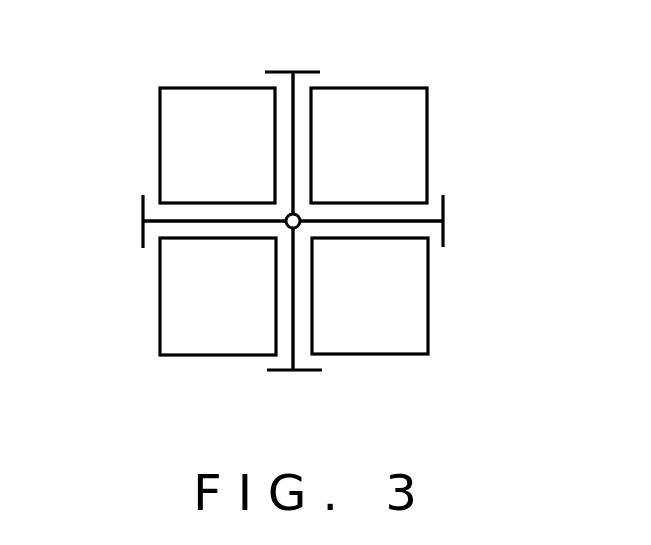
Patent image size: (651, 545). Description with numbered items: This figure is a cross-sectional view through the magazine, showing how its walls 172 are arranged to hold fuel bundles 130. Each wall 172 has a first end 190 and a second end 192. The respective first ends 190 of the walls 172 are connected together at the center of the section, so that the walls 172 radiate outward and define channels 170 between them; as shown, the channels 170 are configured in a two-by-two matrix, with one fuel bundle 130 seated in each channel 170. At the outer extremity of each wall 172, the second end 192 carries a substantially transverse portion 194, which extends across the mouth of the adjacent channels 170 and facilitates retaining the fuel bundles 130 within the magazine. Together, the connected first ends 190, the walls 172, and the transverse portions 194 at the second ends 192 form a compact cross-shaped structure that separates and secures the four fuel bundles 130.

The fuel bundle 130 is at (175, 108).
The channel 170 is at (149, 249).
The wall 172 is at (203, 220).
The first end 190 is at (297, 180).
The second end 192 is at (157, 221).
The transverse portion 194 is at (142, 207).